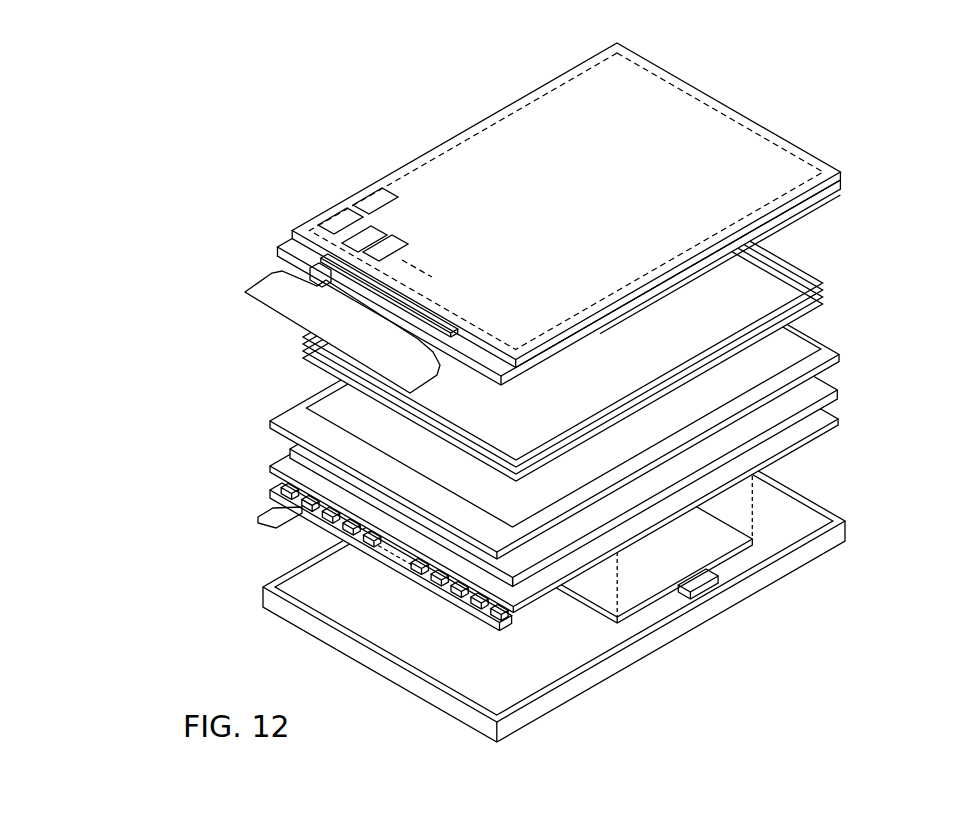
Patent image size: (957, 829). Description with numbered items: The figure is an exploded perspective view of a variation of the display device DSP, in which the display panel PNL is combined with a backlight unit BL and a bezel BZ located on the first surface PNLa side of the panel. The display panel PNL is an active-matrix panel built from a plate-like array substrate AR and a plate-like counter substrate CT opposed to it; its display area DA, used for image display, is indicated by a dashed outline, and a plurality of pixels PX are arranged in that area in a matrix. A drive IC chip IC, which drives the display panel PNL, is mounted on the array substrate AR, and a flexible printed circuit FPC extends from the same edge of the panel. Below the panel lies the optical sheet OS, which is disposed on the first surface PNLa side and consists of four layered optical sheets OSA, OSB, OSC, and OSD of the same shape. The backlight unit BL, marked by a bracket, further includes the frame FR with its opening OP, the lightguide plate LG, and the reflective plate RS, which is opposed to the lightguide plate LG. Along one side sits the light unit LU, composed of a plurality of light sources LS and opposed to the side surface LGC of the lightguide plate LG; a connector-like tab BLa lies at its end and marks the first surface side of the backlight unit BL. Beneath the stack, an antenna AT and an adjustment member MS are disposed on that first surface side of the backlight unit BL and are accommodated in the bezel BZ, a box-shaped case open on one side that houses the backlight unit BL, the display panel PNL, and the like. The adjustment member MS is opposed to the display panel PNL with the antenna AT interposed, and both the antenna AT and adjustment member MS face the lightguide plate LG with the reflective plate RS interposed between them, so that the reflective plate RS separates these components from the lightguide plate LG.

The display device DSP is at (293, 116).
The display panel PNL is at (768, 127).
The counter substrate CT is at (842, 173).
The array substrate AR is at (846, 184).
The first surface PNLa is at (805, 213).
The display area DA is at (680, 86).
The pixel PX is at (327, 203).
The drive IC chip IC is at (302, 247).
The flexible printed circuit FPC is at (272, 273).
The optical sheet OS is at (905, 250).
The optical sheet OSA is at (826, 283).
The optical sheet OSB is at (826, 290).
The optical sheet OSC is at (826, 297).
The optical sheet OSD is at (826, 304).
The backlight unit BL is at (264, 315).
The frame FR is at (842, 357).
The opening of frame OP is at (797, 350).
The lightguide plate LG is at (840, 393).
The side surface LGC is at (501, 584).
The reflective plate RS is at (841, 419).
The light unit LU is at (509, 622).
The light source LS is at (463, 604).
The first surface BLa is at (277, 500).
The antenna AT is at (646, 611).
The adjustment member MS is at (702, 582).
The bezel BZ is at (848, 524).